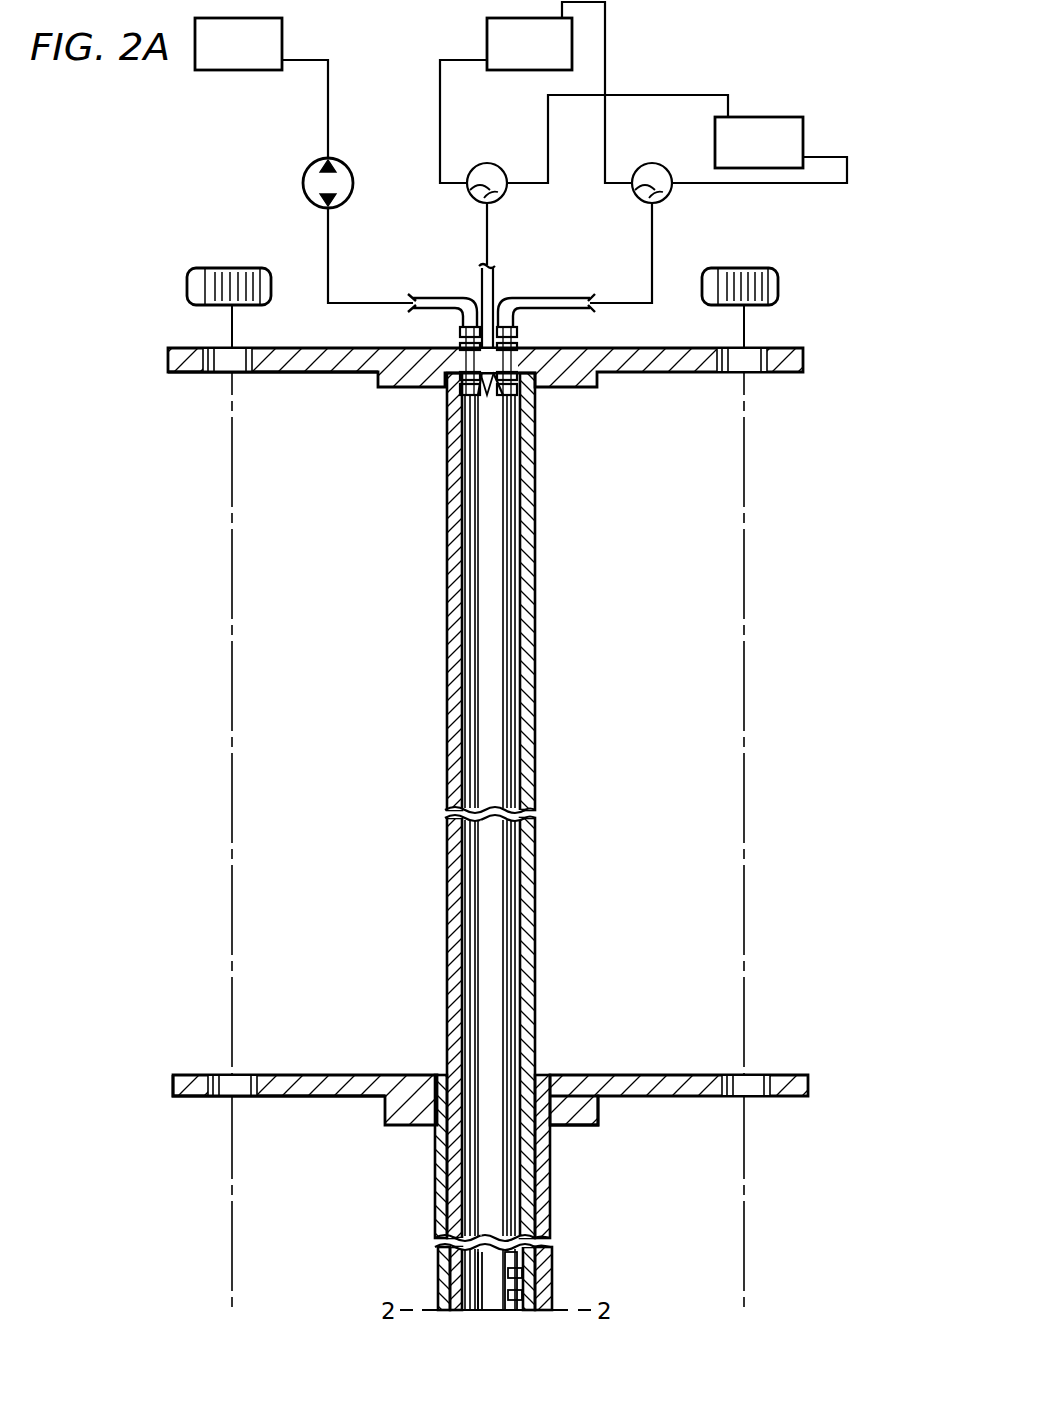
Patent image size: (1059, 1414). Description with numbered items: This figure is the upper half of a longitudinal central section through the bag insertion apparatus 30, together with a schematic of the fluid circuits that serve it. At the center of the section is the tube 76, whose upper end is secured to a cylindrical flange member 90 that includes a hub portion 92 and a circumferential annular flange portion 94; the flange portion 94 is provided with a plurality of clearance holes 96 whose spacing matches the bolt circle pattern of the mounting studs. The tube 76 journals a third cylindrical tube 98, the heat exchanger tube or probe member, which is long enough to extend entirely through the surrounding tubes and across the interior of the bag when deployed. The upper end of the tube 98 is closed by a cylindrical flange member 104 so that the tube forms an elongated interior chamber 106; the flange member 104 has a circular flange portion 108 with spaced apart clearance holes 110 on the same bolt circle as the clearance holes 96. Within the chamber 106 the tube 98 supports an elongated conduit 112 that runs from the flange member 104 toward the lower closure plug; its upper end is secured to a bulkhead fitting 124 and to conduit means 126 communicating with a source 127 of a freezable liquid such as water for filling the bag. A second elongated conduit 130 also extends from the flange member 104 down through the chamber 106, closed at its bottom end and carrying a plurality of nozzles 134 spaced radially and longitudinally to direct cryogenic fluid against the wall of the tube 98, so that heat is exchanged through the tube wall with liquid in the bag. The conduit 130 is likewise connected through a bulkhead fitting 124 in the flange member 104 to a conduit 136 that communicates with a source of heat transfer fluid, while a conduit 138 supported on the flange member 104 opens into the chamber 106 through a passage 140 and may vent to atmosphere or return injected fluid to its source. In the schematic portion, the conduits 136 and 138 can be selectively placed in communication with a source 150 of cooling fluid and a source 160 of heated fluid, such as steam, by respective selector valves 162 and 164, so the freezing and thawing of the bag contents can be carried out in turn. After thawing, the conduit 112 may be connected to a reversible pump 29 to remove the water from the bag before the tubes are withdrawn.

The reversible pump 29 is at (312, 168).
The bag insertion apparatus 30 is at (495, 865).
The tube 76 is at (552, 1188).
The cylindrical flange member 90 is at (600, 1075).
The hub portion 92 is at (600, 1105).
The circumferential annular flange portion 94 is at (183, 1097).
The clearance holes 96 is at (250, 1097).
The third cylindrical tube 98 is at (535, 640).
The cylindrical flange member 104 is at (638, 348).
The interior chamber 106 is at (493, 905).
The circular flange portion 108 is at (272, 372).
The clearance holes 110 is at (210, 366).
The elongated conduit 112 is at (478, 590).
The bulkhead fitting 124 is at (515, 350).
The conduit means 126 is at (440, 298).
The source of freezable liquid 127 is at (282, 35).
The elongated conduit 130 is at (514, 565).
The nozzles 134 is at (505, 1275).
The conduit 136 is at (568, 298).
The conduit 138 is at (490, 280).
The passage 140 is at (490, 378).
The source of cooling fluid 150 is at (780, 117).
The source of heated fluid 160 is at (487, 35).
The selector valve 162 is at (655, 170).
The selector valve 164 is at (487, 170).